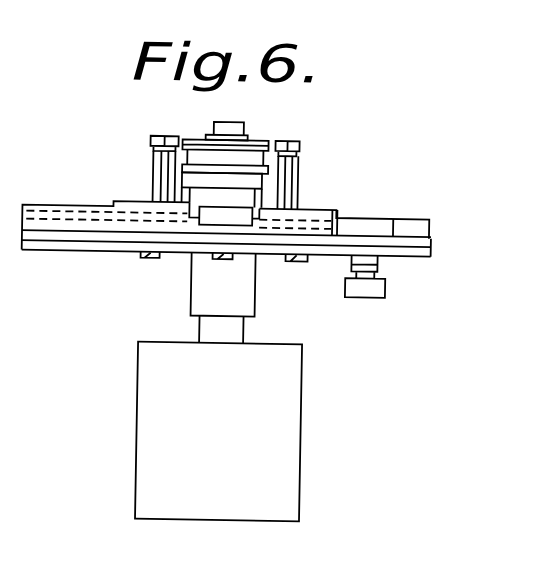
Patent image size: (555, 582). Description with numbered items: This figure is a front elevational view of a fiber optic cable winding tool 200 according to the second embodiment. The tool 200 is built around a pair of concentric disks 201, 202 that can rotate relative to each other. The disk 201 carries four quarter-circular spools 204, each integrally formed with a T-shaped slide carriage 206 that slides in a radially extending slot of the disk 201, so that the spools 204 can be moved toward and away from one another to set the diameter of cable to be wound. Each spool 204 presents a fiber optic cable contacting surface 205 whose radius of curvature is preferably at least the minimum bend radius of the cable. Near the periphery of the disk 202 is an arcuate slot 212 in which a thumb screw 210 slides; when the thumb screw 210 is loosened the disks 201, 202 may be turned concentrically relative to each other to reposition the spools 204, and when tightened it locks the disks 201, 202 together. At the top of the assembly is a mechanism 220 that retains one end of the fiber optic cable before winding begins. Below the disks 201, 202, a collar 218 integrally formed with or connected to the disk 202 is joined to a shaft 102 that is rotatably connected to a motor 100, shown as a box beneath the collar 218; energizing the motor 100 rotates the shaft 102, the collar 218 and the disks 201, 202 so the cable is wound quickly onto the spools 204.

The motor 100 is at (277, 400).
The shaft 102 is at (235, 338).
The fiber optic cable winding tool 200 is at (276, 210).
The disk 201 is at (428, 222).
The disk 202 is at (414, 248).
The quarter-circular spool 204 is at (295, 186).
The fiber optic cable contacting surface 205 is at (293, 153).
The T-shaped slide carriage 206 is at (230, 218).
The thumb screw 210 is at (370, 286).
The arcuate slot 212 is at (186, 222).
The collar 218 is at (215, 298).
The mechanism 220 is at (233, 131).